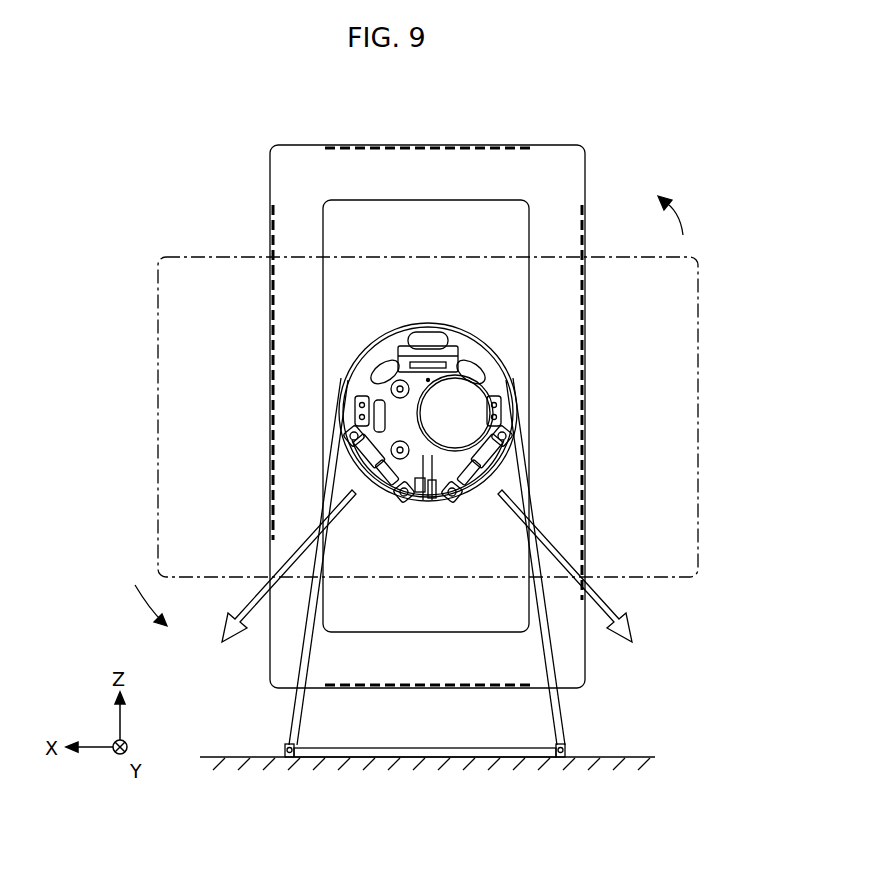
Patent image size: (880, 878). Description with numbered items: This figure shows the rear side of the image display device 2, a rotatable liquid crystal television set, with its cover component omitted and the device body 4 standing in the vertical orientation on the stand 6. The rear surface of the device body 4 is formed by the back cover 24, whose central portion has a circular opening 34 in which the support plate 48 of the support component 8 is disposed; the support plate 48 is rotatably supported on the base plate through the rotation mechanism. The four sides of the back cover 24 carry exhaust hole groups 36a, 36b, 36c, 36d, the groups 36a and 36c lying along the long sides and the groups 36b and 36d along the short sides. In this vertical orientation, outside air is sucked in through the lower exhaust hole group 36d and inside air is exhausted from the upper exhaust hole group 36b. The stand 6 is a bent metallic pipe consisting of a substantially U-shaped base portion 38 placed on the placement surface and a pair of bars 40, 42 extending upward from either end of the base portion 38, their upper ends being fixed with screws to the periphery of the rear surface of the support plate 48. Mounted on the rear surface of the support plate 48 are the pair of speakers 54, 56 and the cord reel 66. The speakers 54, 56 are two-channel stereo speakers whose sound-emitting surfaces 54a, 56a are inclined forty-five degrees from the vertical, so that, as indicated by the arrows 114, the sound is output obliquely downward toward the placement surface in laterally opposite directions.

The image display device 2 is at (686, 146).
The device body 4 is at (455, 400).
The stand 6 is at (427, 605).
The support component 8 is at (423, 418).
The back cover 24 is at (280, 166).
The opening 34 is at (526, 372).
The exhaust hole group 36a is at (270, 384).
The exhaust hole group 36b is at (421, 146).
The exhaust hole group 36c is at (664, 404).
The exhaust hole group 36d is at (460, 727).
The base portion 38 is at (388, 760).
The bar 40 is at (548, 666).
The bar 42 is at (292, 706).
The support plate 48 is at (385, 350).
The speaker 54 is at (370, 456).
The sound-emitting surface 54a is at (378, 497).
The speaker 56 is at (488, 452).
The sound-emitting surface 56a is at (482, 498).
The cord reel 66 is at (470, 415).
The arrow 114 is at (246, 612).